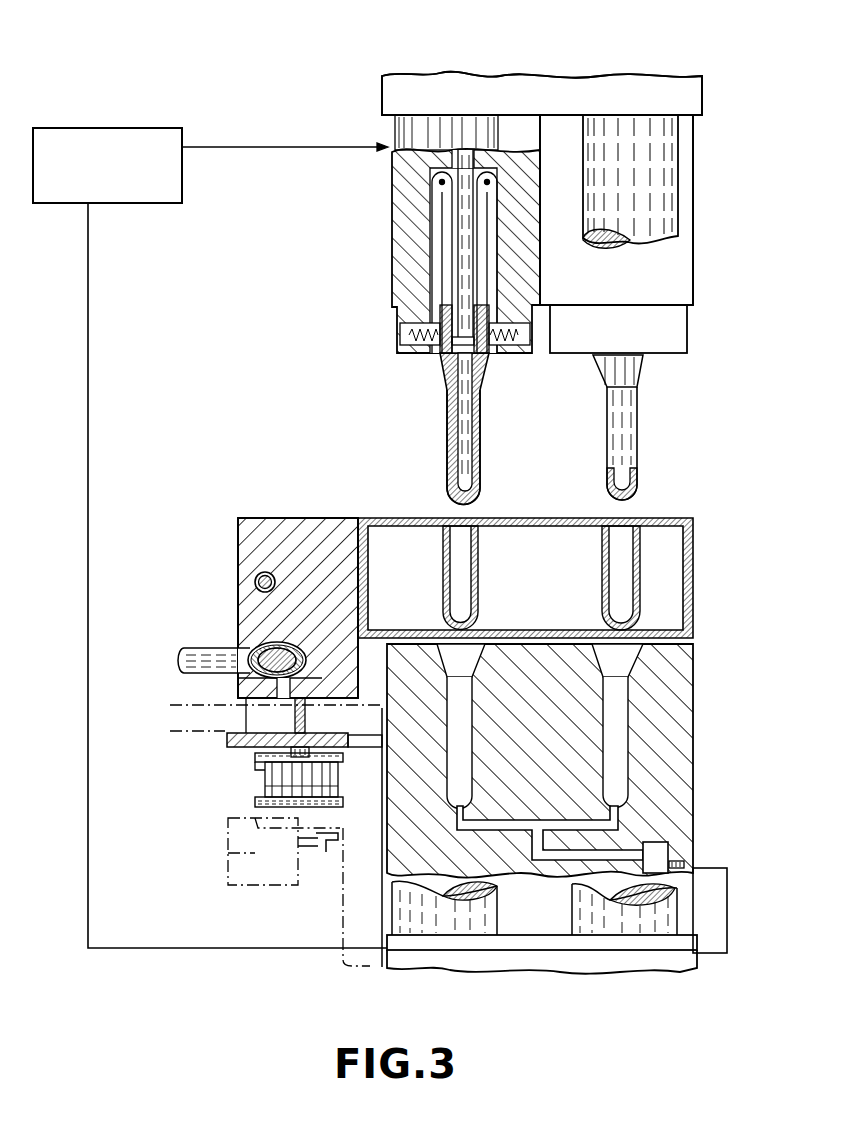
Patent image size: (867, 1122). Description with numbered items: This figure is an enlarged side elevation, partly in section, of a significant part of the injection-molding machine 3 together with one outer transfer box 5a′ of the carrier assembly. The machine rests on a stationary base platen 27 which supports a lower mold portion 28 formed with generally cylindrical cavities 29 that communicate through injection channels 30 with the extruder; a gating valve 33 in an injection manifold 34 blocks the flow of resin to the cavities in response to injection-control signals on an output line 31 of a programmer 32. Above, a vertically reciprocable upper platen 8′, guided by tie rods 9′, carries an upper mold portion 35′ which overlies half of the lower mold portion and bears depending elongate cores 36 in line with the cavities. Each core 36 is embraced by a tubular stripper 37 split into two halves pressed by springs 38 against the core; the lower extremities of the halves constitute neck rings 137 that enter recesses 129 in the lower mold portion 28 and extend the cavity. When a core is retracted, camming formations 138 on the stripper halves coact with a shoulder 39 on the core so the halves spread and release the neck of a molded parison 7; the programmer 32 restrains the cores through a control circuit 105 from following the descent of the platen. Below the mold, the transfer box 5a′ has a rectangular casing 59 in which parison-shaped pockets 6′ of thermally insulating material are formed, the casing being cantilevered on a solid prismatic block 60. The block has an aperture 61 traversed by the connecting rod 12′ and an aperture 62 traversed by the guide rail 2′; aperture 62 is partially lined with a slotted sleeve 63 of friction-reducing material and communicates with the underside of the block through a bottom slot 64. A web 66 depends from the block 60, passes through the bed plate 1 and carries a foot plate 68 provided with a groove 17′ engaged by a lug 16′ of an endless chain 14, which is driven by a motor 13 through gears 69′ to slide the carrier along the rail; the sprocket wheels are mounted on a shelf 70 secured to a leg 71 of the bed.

The bed plate 1 is at (185, 720).
The rails 2′ is at (196, 660).
The injection-molding machine 3 is at (770, 135).
The outer transfer box 5a′ is at (255, 490).
The pockets 6′ is at (470, 588).
The parison 7 is at (605, 486).
The upper platen 8′ is at (683, 97).
The tie rods 9′ is at (600, 148).
The rod 12′ is at (262, 584).
The motor 13 is at (228, 853).
The endless chain 14 is at (275, 792).
The lug 16′ is at (345, 748).
The groove 17′ is at (308, 735).
The base platen 27 is at (672, 978).
The lower mold portion 28 is at (655, 765).
The cavities 29 is at (462, 735).
The injection channels 30 is at (572, 823).
The output line 31 is at (88, 823).
The programmer 32 is at (165, 195).
The gating valve 33 is at (668, 853).
The injection manifold 34 is at (620, 852).
The upper mold portion 35′ is at (675, 278).
The core 36 is at (613, 478).
The tubular stripper 37 is at (480, 256).
The springs 38 is at (512, 307).
The shoulder 39 is at (438, 325).
The casing 59 is at (672, 583).
The block 60 is at (343, 528).
The aperture 61 is at (262, 574).
The aperture 62 is at (275, 645).
The slotted sleeve 63 is at (305, 650).
The bottom slot 64 is at (291, 690).
The web 66 is at (262, 718).
The foot plate 68 is at (225, 740).
The gears 69′ is at (323, 850).
The shelf 70 is at (342, 905).
The leg 71 is at (355, 928).
The control circuit 105 is at (190, 145).
The recesses 129 is at (620, 660).
The neck rings 137 is at (447, 368).
The camming formations 138 is at (458, 208).